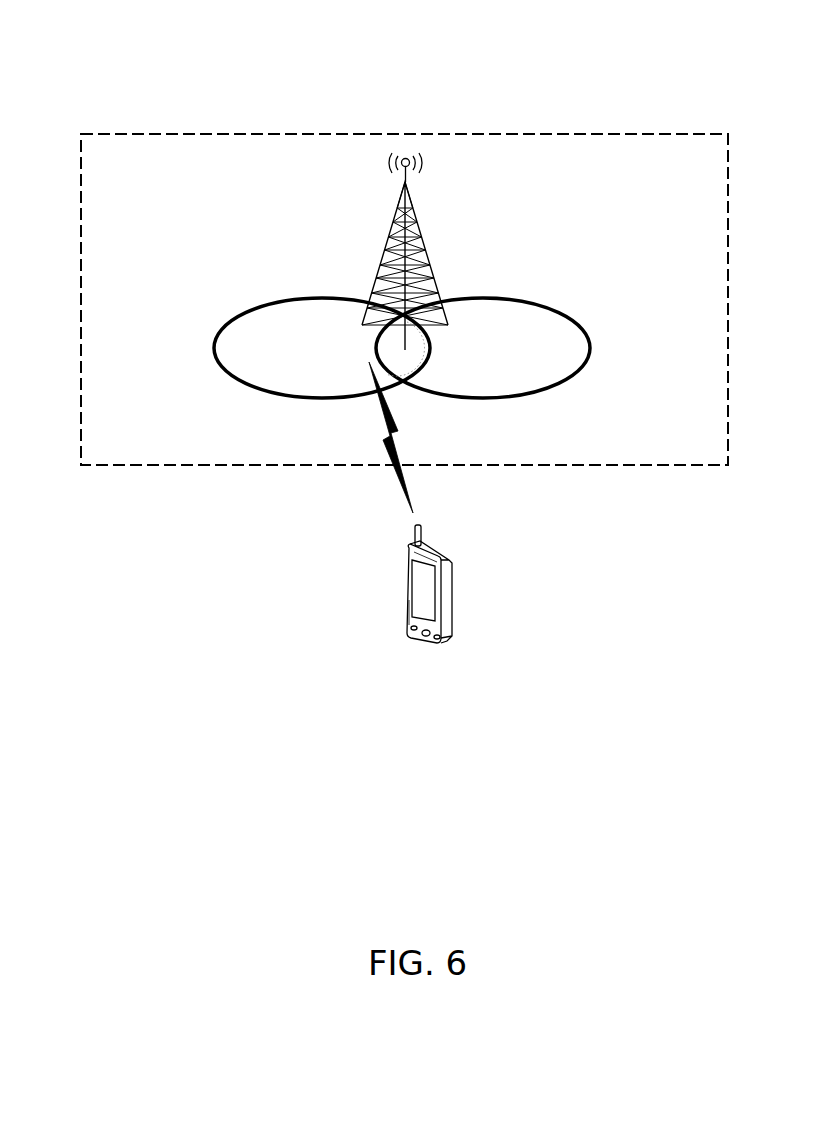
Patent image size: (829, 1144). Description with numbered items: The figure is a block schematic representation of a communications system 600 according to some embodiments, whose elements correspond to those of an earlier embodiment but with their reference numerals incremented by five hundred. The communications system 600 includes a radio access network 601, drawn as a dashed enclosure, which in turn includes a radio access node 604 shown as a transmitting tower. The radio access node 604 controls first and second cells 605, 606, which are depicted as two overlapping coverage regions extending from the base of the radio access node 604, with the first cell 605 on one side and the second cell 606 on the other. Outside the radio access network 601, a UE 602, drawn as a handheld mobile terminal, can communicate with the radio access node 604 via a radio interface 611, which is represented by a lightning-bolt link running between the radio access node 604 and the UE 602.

The communications system 600 is at (224, 48).
The radio access network 601 is at (604, 133).
The UE 602 is at (453, 600).
The radio access node 604 is at (430, 249).
The first cell 605 is at (228, 320).
The second cell 606 is at (580, 322).
The radio interface 611 is at (412, 500).